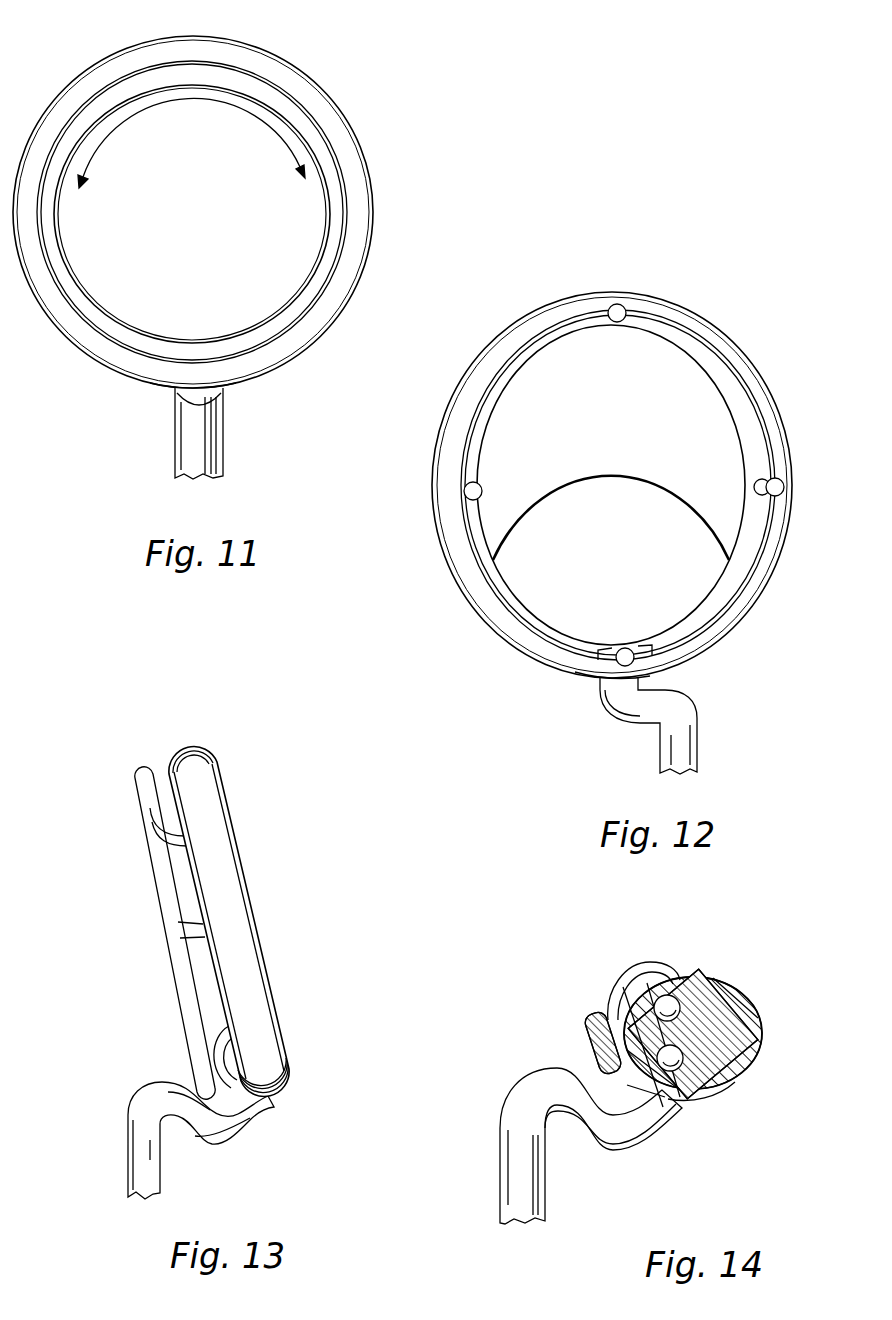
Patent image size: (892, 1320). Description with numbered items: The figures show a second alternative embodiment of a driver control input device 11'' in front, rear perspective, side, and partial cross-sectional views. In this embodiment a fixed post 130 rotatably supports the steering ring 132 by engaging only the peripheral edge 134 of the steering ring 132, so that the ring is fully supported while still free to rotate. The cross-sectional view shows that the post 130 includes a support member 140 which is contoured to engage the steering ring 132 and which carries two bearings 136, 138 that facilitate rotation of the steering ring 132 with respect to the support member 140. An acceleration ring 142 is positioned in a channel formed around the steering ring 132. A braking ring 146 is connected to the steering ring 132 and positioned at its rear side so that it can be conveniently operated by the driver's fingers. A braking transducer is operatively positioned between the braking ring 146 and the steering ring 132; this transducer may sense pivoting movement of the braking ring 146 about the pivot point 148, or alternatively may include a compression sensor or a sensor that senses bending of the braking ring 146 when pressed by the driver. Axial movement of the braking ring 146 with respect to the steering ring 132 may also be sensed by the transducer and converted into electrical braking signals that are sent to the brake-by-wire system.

In FIG. 11, the driver control input device 11'' is at (236, 254).
In FIG. 12, the driver control input device 11'' is at (581, 533).
In FIG. 13, the driver control input device 11'' is at (210, 951).
In FIG. 14, the driver control input device 11'' is at (641, 1061).
In FIG. 11, the fixed post 130 is at (222, 428).
In FIG. 12, the fixed post 130 is at (698, 740).
In FIG. 13, the fixed post 130 is at (127, 1183).
In FIG. 14, the fixed post 130 is at (498, 1172).
In FIG. 11, the steering ring 132 is at (296, 66).
In FIG. 12, the steering ring 132 is at (462, 588).
In FIG. 13, the steering ring 132 is at (205, 750).
In FIG. 14, the steering ring 132 is at (762, 1057).
In FIG. 11, the peripheral edge 134 is at (158, 390).
In FIG. 12, the peripheral edge 134 is at (585, 699).
In FIG. 13, the peripheral edge 134 is at (275, 1093).
In FIG. 14, the peripheral edge 134 is at (717, 1097).
In FIG. 14, the bearing 136 is at (710, 987).
In FIG. 14, the bearing 138 is at (735, 1083).
In FIG. 14, the support member 140 is at (628, 1087).
In FIG. 14, the acceleration ring 142 is at (745, 990).
In FIG. 12, the braking ring 146 is at (740, 357).
In FIG. 13, the braking ring 146 is at (185, 1024).
In FIG. 14, the braking ring 146 is at (603, 1000).
In FIG. 14, the pivot point 148 is at (680, 977).